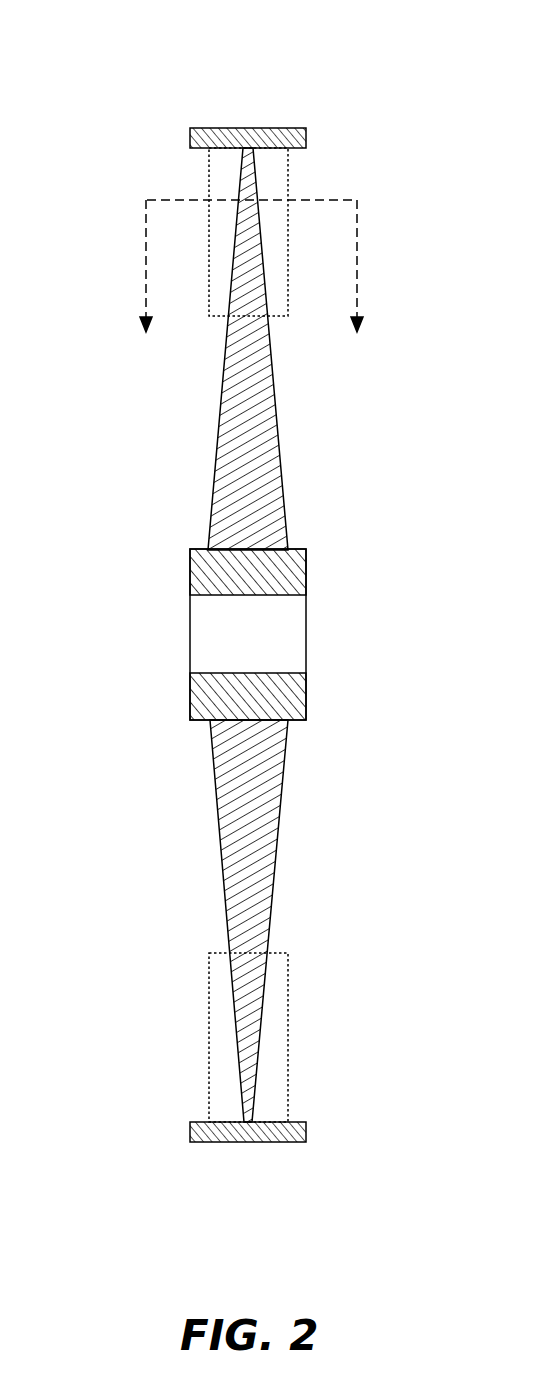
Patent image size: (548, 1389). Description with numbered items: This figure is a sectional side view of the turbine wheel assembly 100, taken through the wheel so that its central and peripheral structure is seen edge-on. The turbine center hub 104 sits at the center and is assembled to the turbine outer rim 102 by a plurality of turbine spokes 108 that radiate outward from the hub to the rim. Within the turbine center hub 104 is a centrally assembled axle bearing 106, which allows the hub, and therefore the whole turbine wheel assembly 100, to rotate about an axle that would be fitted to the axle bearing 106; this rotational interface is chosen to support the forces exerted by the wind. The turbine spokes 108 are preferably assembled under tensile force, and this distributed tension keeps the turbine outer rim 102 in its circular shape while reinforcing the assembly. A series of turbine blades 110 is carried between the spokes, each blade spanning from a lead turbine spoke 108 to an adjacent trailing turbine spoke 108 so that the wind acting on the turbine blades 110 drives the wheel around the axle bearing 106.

The turbine wheel assembly 100 is at (147, 87).
The turbine outer rim 102 is at (248, 128).
The turbine center hub 104 is at (304, 577).
The axle bearing 106 is at (226, 630).
The turbine spokes 108 is at (262, 416).
The turbine blades 110 is at (273, 168).